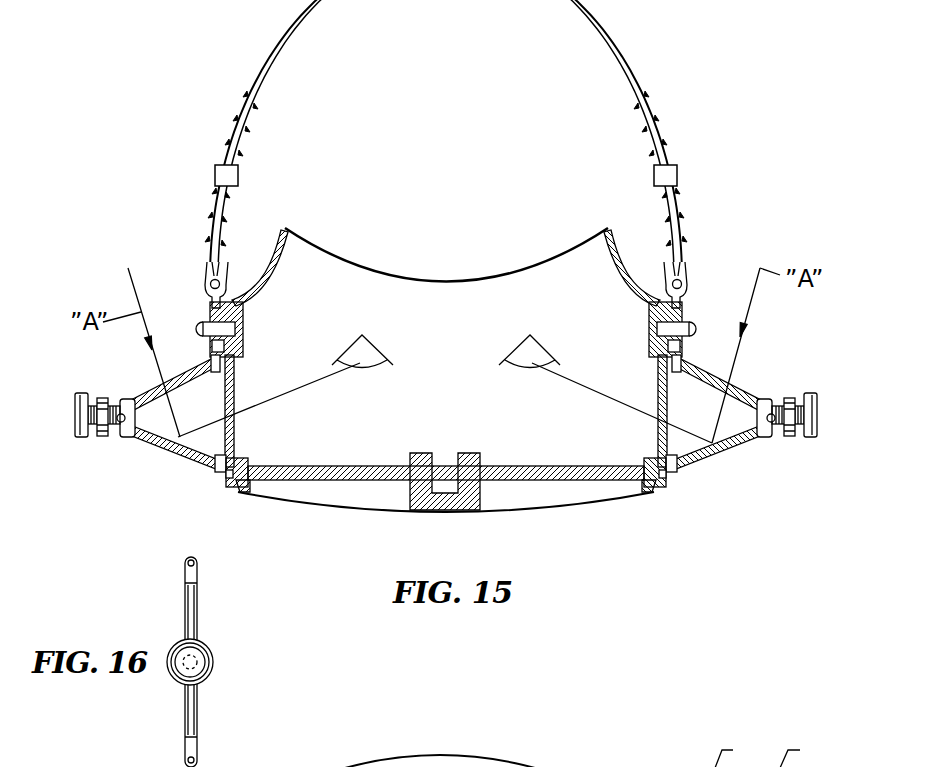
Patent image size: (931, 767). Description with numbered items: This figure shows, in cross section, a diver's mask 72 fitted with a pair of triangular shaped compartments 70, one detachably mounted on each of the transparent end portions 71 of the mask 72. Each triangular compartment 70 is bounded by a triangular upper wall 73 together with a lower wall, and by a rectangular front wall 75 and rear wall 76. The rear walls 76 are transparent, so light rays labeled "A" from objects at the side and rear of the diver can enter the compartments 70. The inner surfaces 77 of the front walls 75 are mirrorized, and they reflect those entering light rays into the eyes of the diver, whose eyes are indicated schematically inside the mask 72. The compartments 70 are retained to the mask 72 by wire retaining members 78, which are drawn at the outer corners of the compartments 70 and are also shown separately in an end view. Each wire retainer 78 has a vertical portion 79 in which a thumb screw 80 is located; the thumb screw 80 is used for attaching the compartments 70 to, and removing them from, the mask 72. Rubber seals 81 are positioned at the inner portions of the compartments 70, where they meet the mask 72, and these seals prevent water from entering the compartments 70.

In FIG. 15, the triangular shaped compartment 70 is at (200, 463).
In FIG. 16, the triangular shaped compartment 70 is at (805, 753).
In FIG. 15, the transparent end portion 71 is at (230, 393).
In FIG. 15, the diver's mask 72 is at (548, 510).
In FIG. 16, the diver's mask 72 is at (535, 766).
In FIG. 16, the triangular upper wall 73 is at (739, 753).
In FIG. 15, the front wall 75 is at (157, 443).
In FIG. 15, the rear wall 76 is at (147, 387).
In FIG. 15, the inner surface 77 is at (222, 440).
In FIG. 15, the wire retaining member 78 is at (102, 434).
In FIG. 16, the wire retaining member 78 is at (197, 597).
In FIG. 16, the vertical portion 79 is at (207, 674).
In FIG. 15, the thumb screw 80 is at (75, 398).
In FIG. 16, the thumb screw 80 is at (213, 640).
In FIG. 15, the rubber seal 81 is at (215, 480).